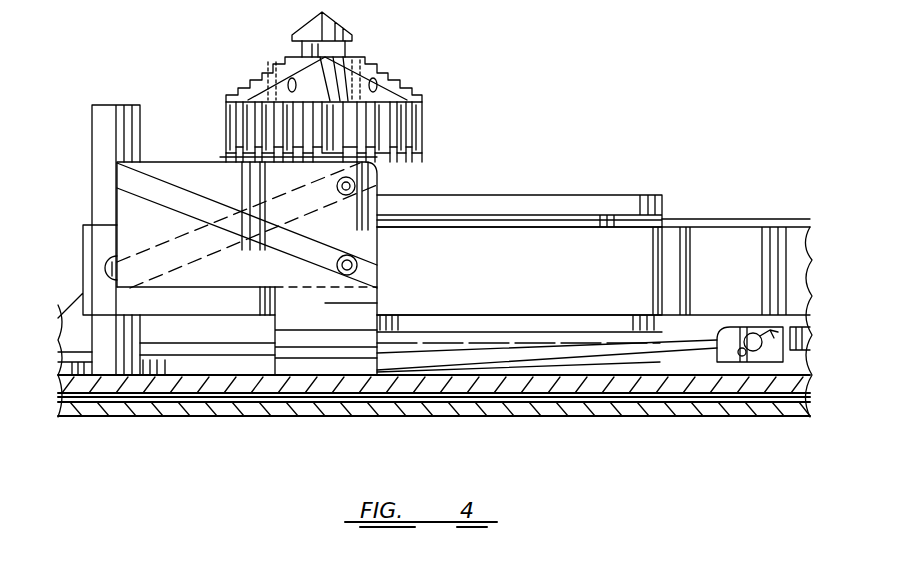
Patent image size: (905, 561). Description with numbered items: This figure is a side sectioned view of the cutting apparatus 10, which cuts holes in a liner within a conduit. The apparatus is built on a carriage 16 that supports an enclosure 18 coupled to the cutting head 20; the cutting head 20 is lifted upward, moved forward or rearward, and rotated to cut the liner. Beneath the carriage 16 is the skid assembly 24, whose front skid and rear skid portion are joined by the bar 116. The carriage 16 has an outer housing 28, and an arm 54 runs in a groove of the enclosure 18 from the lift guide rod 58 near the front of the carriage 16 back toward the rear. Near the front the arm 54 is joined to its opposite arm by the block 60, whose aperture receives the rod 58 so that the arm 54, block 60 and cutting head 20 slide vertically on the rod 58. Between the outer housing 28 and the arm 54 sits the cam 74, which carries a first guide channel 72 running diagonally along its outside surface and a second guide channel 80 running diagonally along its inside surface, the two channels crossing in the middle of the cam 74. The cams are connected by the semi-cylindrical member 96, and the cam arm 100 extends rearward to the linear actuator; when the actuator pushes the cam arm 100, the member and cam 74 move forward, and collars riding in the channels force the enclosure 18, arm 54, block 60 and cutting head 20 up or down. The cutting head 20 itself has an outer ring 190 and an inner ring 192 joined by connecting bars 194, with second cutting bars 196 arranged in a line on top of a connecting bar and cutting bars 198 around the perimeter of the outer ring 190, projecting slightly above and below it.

The cutting apparatus 10 is at (645, 178).
The carriage 16 is at (434, 412).
The enclosure 18 is at (575, 182).
The cutting head 20 is at (340, 88).
The skid assembly 24 is at (357, 411).
The outer housing 28 is at (740, 387).
The arm 54 is at (483, 240).
The lift guide rod 58 is at (117, 118).
The block 60 is at (74, 251).
The first guide channel 72 is at (357, 185).
The cam 74 is at (152, 162).
The second guide channel 80 is at (180, 198).
The semi-cylindrical member 96 is at (287, 352).
The cam arm 100 is at (660, 350).
The bar 116 is at (446, 405).
The outer ring 190 is at (355, 123).
The inner ring 192 is at (352, 58).
The connecting bars 194 is at (327, 68).
The second cutting bars 196 is at (246, 90).
The cutting bars 198 is at (410, 140).